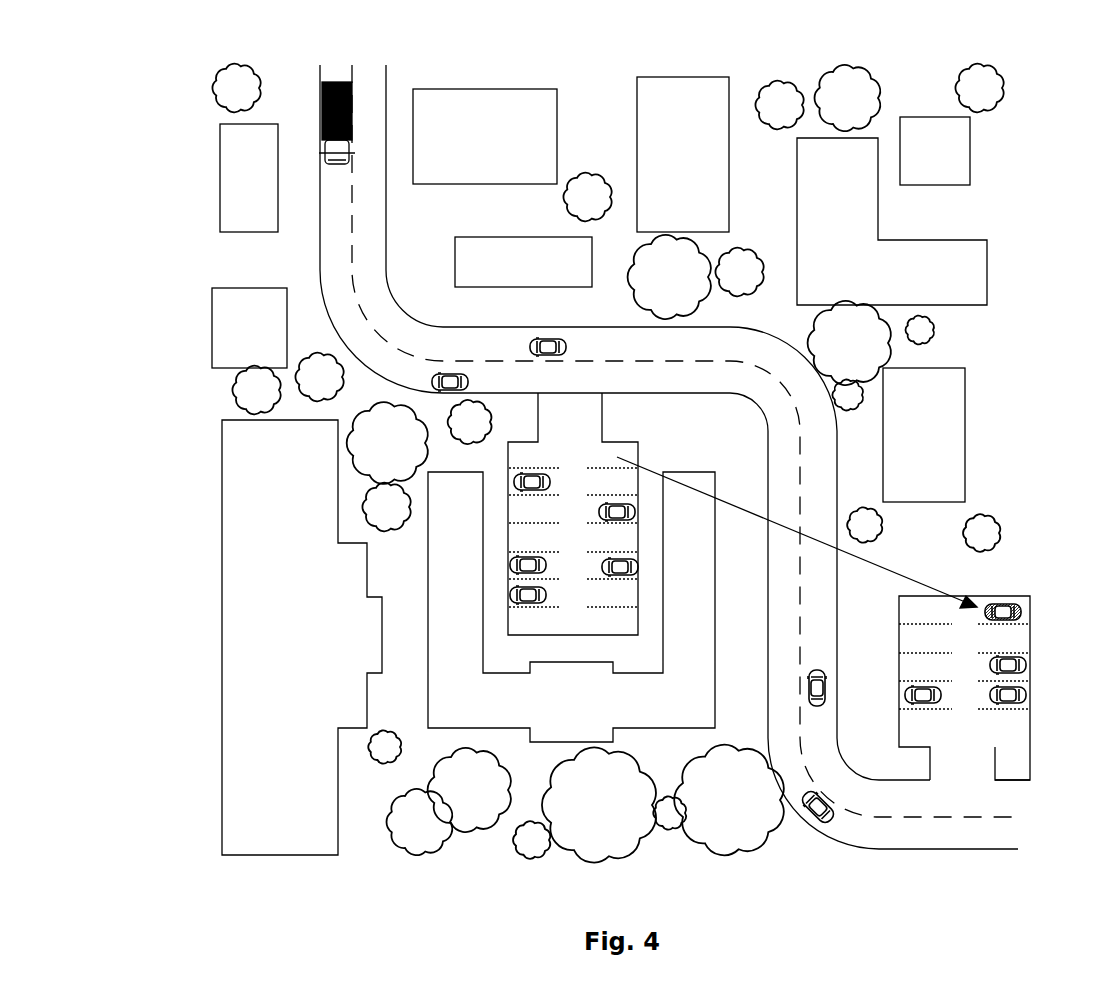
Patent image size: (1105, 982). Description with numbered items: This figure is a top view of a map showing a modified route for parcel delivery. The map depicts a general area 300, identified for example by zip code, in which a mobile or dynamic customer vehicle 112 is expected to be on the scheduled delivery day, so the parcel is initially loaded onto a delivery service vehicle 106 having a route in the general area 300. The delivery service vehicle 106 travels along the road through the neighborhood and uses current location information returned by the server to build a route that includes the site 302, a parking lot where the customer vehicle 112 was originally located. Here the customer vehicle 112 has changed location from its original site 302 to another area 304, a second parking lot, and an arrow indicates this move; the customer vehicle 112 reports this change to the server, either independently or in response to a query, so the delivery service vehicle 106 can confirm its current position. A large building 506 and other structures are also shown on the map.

The general area 300 is at (176, 124).
The delivery service vehicle 106 is at (340, 82).
The site 302 is at (589, 429).
The another area 304 is at (979, 767).
The customer vehicle 112 is at (1022, 611).
The building 506 is at (315, 637).